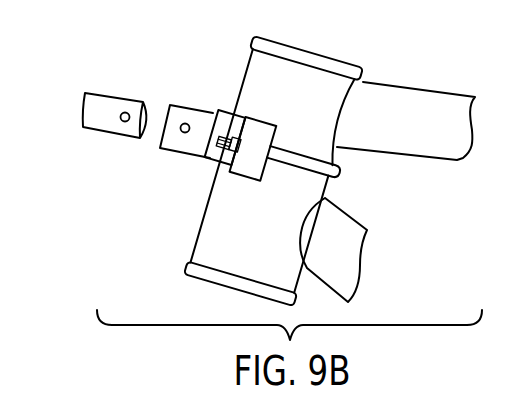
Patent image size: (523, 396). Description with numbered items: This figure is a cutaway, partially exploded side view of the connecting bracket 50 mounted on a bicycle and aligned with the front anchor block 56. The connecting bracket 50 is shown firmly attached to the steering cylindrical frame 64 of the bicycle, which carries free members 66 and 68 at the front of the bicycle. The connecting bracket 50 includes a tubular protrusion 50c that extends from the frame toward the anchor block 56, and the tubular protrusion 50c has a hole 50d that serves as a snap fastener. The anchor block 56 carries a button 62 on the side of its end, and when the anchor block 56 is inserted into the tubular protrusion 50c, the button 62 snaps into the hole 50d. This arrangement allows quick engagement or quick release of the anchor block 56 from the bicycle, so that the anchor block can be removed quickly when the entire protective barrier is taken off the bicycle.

The connecting bracket 50 is at (340, 178).
The tubular protrusion 50c is at (185, 104).
The hole 50d is at (185, 128).
The anchor block 56 is at (141, 100).
The button 62 is at (125, 117).
The steering cylindrical frame 64 is at (341, 66).
The free member 66 is at (435, 88).
The free member 68 is at (367, 230).